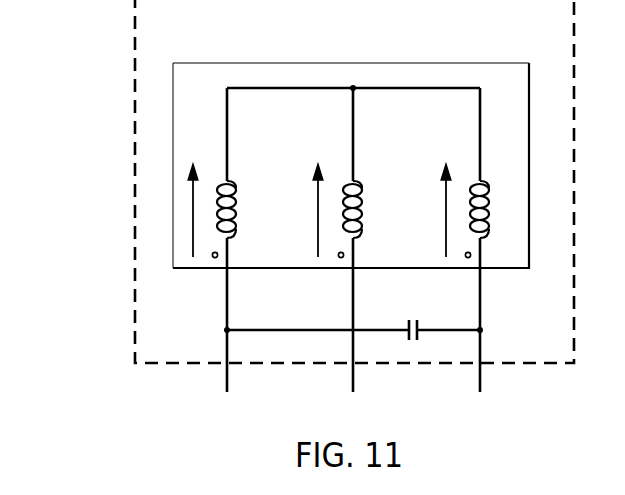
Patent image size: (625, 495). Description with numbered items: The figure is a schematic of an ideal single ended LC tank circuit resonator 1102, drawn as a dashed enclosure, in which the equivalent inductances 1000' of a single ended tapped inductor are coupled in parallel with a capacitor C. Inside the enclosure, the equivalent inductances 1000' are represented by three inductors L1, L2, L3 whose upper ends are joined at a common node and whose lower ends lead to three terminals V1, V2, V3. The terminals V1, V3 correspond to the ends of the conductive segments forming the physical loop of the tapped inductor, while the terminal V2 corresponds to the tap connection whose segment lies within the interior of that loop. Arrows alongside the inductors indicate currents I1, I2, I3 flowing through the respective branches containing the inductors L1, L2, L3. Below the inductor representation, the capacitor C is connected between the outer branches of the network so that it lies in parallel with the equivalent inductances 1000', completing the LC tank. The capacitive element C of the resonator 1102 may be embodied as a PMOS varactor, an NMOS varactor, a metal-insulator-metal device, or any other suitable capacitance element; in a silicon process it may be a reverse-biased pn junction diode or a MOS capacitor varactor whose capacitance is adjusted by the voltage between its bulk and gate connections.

The equivalent inductances of the tapped inductor 1000' is at (351, 167).
The single ended LC tank circuit resonator 1102 is at (134, 178).
The equivalent inductance L1 is at (237, 219).
The equivalent inductance L2 is at (364, 219).
The equivalent inductance L3 is at (491, 219).
The capacitor C is at (353, 315).
The current I1 is at (193, 189).
The current I2 is at (318, 189).
The current I3 is at (445, 189).
The terminal V1 is at (227, 376).
The terminal V2 is at (353, 376).
The terminal V3 is at (481, 376).